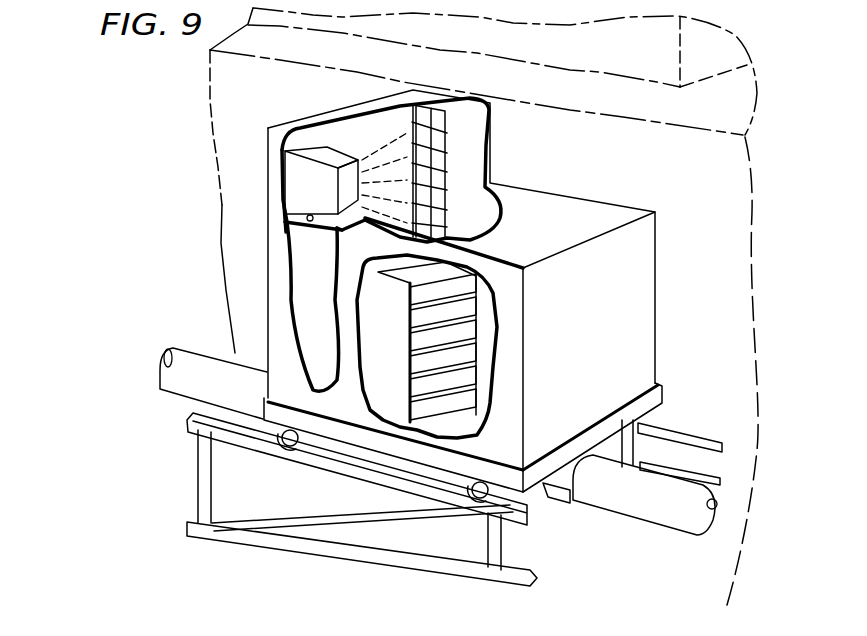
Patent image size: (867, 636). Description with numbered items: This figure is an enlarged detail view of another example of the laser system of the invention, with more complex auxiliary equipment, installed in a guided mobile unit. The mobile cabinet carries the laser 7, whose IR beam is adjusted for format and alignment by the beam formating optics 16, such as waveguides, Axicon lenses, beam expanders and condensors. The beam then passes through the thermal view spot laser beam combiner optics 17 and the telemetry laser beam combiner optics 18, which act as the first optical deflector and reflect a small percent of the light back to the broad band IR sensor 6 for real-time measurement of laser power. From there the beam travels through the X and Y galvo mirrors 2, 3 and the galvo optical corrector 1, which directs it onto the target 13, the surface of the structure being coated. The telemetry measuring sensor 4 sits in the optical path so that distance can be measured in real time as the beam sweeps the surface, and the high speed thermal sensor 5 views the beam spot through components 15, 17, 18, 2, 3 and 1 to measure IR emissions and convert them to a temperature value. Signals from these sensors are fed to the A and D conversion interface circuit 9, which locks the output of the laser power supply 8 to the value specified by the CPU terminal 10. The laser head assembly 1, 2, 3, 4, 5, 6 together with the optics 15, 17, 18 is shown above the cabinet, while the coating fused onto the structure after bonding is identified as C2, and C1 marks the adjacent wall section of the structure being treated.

The first conveyor / wall section C1 is at (222, 73).
The fused on coating C2 is at (733, 173).
The target 13 is at (618, 173).
The galvo optical corrector 1 is at (227, 170).
The X galvo mirror 2 is at (227, 170).
The Y galvo mirror 3 is at (227, 170).
The telemetry measuring sensor 4 is at (227, 170).
The high speed thermal sensor 5 is at (227, 170).
The broad band IR sensor 6 is at (227, 170).
The optical component 15 is at (227, 170).
The thermal view spot laser beam combiner optics 17 is at (227, 170).
The telemetry laser beam combiner optics 18 is at (293, 190).
The laser 7 is at (292, 256).
The beam formating optics 16 is at (288, 232).
The laser power supply 8 is at (314, 346).
The A and D conversion interface circuit 9 is at (314, 346).
The CPU terminal 10 is at (377, 314).